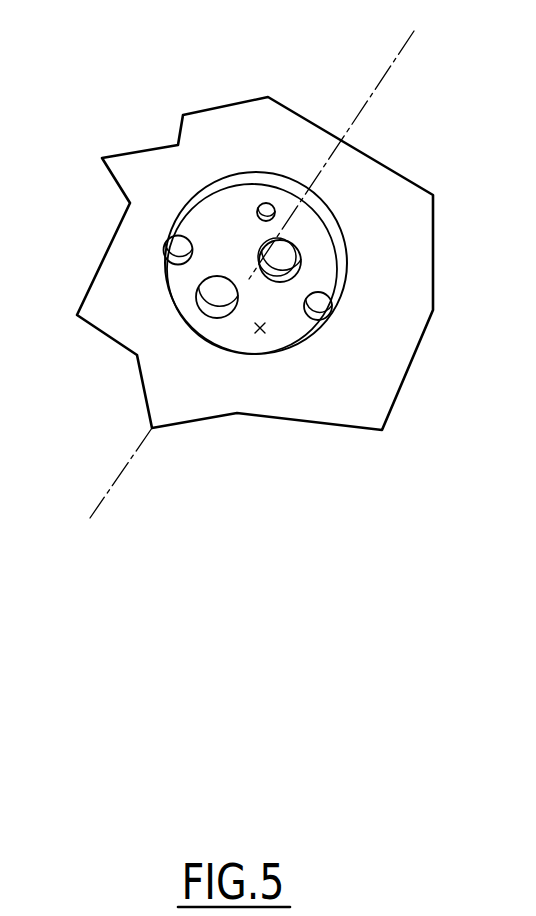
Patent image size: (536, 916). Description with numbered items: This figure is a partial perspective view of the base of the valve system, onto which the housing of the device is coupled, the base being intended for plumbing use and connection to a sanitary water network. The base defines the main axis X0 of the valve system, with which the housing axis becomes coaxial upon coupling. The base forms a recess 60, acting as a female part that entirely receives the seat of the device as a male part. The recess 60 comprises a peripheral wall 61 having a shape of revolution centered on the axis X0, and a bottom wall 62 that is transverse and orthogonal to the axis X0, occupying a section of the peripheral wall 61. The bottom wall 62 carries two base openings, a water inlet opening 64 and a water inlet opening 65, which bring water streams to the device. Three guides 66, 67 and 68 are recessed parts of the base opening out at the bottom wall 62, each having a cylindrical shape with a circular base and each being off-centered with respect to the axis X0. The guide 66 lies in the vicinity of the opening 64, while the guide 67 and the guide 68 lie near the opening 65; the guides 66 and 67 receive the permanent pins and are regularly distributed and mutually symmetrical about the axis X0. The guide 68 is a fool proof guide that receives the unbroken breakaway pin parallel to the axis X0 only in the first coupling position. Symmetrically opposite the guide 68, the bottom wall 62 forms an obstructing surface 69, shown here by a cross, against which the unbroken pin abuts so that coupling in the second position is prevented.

The recess 60 is at (217, 237).
The peripheral wall 61 is at (236, 183).
The bottom wall 62 is at (274, 308).
The water inlet opening 64 is at (217, 295).
The water inlet opening 65 is at (302, 250).
The guide 66 is at (176, 243).
The guide 67 is at (325, 297).
The guide 68 is at (267, 206).
The obstructing surface 69 is at (258, 344).
The main axis X0 is at (265, 271).